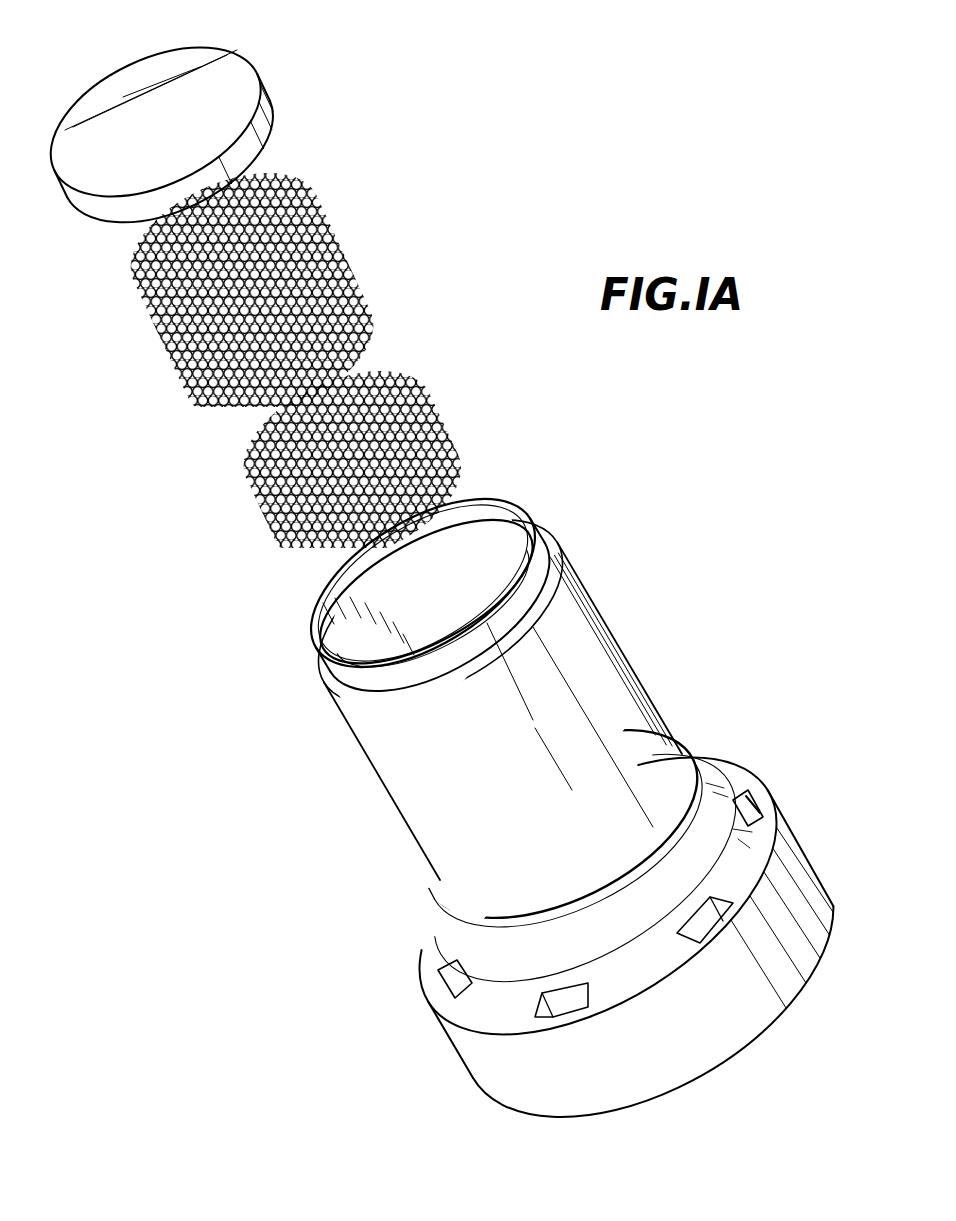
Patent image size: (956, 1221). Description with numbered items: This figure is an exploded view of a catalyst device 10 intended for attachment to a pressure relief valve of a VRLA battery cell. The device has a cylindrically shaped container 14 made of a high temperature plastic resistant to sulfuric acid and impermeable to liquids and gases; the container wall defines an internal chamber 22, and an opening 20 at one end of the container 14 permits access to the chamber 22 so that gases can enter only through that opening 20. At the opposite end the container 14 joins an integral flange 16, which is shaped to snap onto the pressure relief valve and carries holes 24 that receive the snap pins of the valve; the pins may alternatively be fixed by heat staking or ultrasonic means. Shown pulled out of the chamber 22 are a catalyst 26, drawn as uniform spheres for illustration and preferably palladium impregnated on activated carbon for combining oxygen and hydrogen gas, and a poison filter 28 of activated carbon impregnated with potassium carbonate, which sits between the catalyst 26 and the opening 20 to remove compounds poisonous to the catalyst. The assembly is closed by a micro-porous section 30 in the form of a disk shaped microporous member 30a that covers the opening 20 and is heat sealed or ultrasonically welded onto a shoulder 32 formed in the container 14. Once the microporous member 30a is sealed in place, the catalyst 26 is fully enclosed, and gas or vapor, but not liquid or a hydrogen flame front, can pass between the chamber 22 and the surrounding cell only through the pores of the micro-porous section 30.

The catalyst device 10 is at (350, 8).
The container 14 is at (393, 783).
The flange 16 is at (463, 1048).
The opening 20 is at (377, 597).
The chamber 22 is at (393, 640).
The holes 24 is at (443, 970).
The catalyst 26 is at (423, 358).
The poison filter 28 is at (318, 153).
The micro-porous section 30 is at (236, 72).
The microporous member 30a is at (268, 99).
The shoulder 32 is at (490, 557).